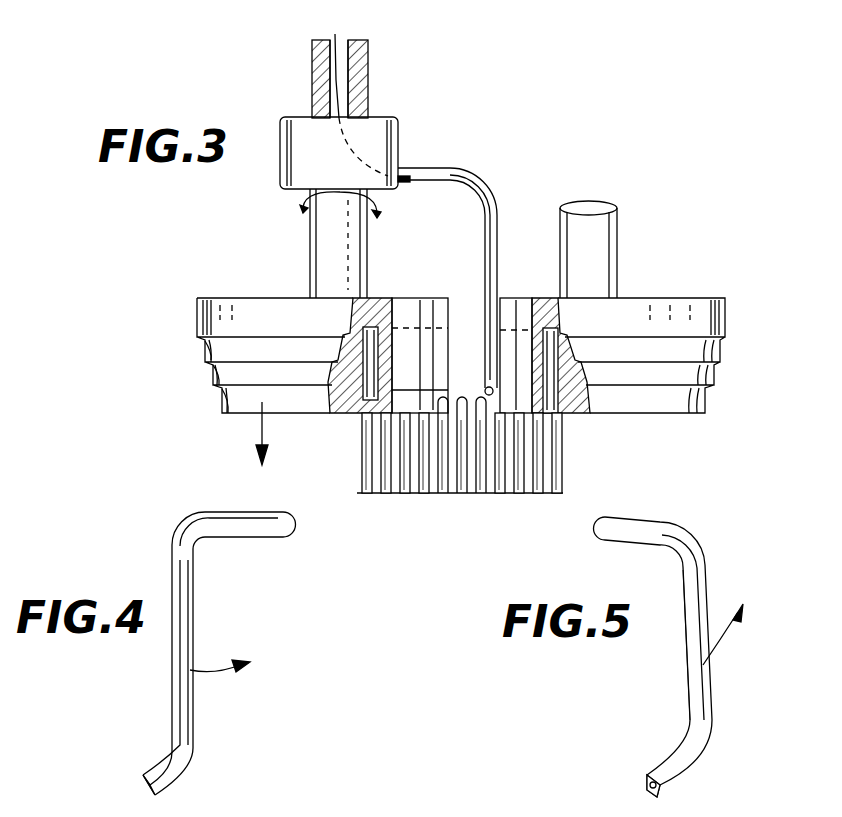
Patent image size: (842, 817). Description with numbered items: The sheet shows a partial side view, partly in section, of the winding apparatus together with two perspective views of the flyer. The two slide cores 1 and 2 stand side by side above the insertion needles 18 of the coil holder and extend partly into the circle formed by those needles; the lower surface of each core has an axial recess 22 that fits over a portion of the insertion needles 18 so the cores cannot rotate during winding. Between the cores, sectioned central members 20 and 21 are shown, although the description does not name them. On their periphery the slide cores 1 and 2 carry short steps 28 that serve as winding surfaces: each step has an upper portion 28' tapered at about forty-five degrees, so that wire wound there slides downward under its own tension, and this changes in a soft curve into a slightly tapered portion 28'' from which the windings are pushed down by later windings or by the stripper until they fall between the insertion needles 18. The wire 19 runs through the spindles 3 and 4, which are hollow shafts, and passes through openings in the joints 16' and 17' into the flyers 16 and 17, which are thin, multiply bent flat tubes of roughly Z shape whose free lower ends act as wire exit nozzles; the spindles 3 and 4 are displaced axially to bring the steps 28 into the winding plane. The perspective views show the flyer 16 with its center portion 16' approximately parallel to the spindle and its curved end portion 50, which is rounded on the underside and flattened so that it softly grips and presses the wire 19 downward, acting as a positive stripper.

In FIG. 3, the slide core 1 is at (700, 308).
In FIG. 3, the slide core 2 is at (212, 315).
In FIG. 3, the spindle 3 is at (596, 250).
In FIG. 3, the spindle 4 is at (345, 249).
In FIG. 4, the flyer 16 is at (219, 649).
In FIG. 5, the flyer 16 is at (657, 650).
In FIG. 4, the joint 16' is at (219, 699).
In FIG. 5, the joint 16' is at (735, 699).
In FIG. 3, the flyer 17 is at (459, 277).
In FIG. 3, the joint 17' is at (319, 153).
In FIG. 3, the insertion needles 18 is at (550, 487).
In FIG. 3, the wire 19 is at (362, 100).
In FIG. 3, the clamp block 20 is at (518, 298).
In FIG. 3, the clamp block 21 is at (418, 298).
In FIG. 3, the axial recess 22 is at (372, 387).
In FIG. 3, the short steps 28 is at (191, 379).
In FIG. 3, the upper portion of step 28' is at (180, 349).
In FIG. 3, the slightly tapered portion 28'' is at (192, 407).
In FIG. 4, the curved end portion 50 is at (185, 765).
In FIG. 5, the curved end portion 50 is at (694, 775).